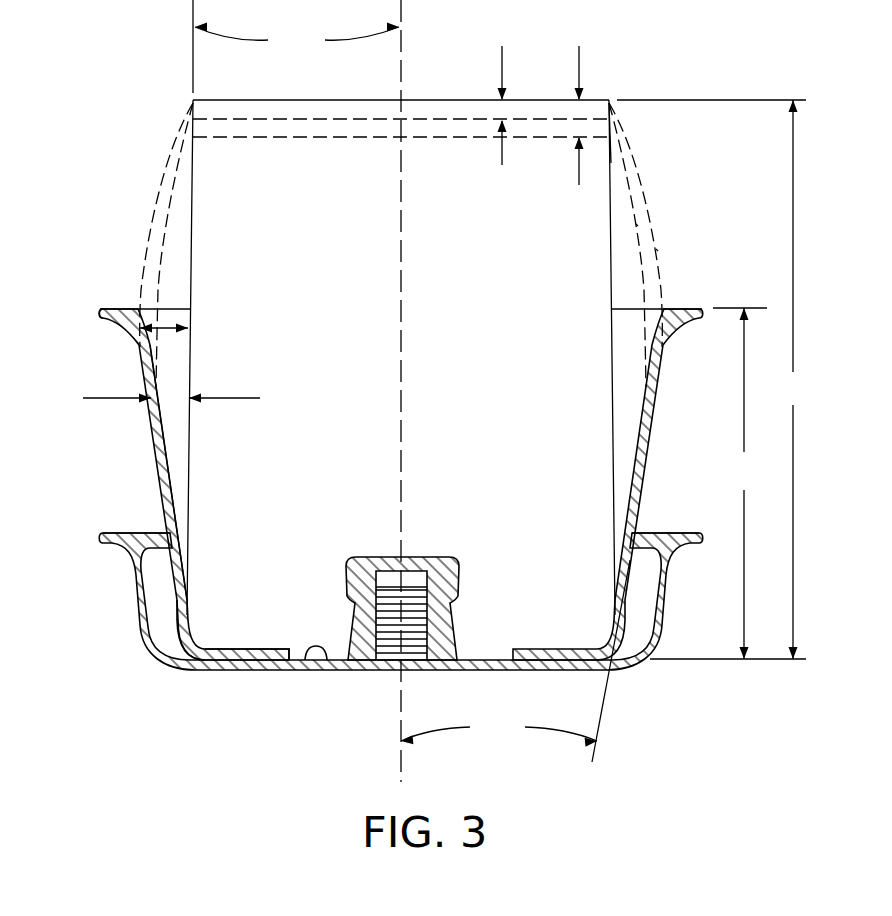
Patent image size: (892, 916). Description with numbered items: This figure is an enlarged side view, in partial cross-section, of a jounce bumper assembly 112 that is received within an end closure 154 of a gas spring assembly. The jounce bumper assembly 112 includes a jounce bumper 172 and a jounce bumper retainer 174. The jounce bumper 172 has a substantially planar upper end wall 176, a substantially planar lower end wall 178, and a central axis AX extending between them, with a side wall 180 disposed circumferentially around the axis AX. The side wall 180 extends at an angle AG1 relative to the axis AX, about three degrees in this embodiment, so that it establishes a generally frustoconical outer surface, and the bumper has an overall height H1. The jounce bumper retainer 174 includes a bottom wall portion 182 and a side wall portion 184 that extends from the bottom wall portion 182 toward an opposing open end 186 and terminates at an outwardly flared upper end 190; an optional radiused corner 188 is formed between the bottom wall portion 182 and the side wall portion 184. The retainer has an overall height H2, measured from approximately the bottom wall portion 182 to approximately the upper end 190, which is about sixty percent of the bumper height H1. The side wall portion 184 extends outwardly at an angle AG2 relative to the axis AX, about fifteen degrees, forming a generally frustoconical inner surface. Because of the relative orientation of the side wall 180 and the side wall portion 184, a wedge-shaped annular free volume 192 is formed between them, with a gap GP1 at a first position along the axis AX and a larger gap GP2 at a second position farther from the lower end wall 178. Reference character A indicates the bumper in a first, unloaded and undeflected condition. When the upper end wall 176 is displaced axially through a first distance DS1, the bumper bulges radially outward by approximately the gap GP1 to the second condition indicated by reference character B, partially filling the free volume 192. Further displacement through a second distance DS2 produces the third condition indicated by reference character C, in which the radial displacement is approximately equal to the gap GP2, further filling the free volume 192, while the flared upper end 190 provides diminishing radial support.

The jounce bumper assembly 112 is at (152, 138).
The end closure 154 is at (132, 598).
The jounce bumper 172 is at (190, 237).
The jounce bumper retainer 174 is at (156, 472).
The upper end wall 176 is at (433, 99).
The lower end wall 178 is at (327, 660).
The side wall 180 is at (612, 198).
The bottom wall portion 182 is at (268, 652).
The side wall portion 184 is at (165, 495).
The open end 186 is at (130, 311).
The radiused corner 188 is at (183, 632).
The upper end 190 is at (127, 328).
The free volume 192 is at (172, 413).
The central axis AX is at (400, 303).
The angle AG1 is at (296, 46).
The angle AG2 is at (515, 661).
The first axial distance DS1 is at (504, 67).
The second axial distance DS2 is at (581, 67).
The first gap GP1 is at (233, 398).
The second gap GP2 is at (165, 328).
The jounce bumper height H1 is at (711, 379).
The retainer height H2 is at (740, 483).
The first condition A is at (612, 163).
The second condition B is at (637, 225).
The third condition C is at (657, 250).